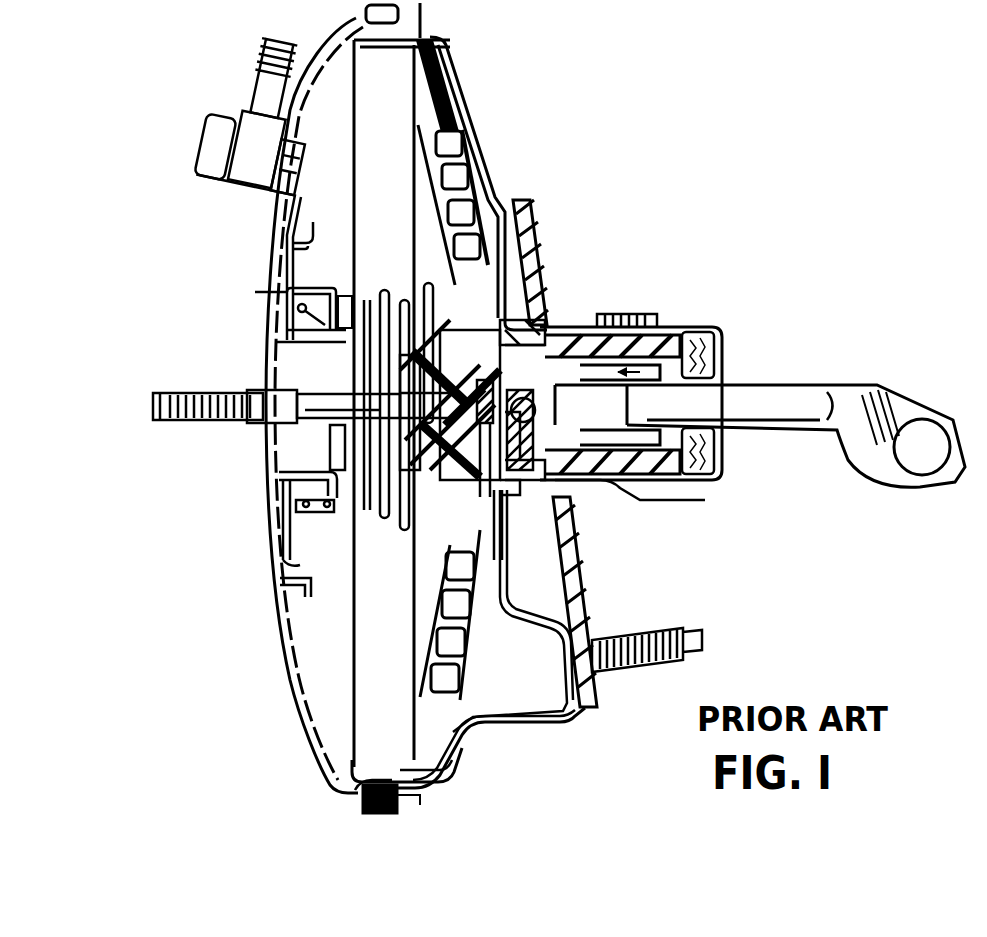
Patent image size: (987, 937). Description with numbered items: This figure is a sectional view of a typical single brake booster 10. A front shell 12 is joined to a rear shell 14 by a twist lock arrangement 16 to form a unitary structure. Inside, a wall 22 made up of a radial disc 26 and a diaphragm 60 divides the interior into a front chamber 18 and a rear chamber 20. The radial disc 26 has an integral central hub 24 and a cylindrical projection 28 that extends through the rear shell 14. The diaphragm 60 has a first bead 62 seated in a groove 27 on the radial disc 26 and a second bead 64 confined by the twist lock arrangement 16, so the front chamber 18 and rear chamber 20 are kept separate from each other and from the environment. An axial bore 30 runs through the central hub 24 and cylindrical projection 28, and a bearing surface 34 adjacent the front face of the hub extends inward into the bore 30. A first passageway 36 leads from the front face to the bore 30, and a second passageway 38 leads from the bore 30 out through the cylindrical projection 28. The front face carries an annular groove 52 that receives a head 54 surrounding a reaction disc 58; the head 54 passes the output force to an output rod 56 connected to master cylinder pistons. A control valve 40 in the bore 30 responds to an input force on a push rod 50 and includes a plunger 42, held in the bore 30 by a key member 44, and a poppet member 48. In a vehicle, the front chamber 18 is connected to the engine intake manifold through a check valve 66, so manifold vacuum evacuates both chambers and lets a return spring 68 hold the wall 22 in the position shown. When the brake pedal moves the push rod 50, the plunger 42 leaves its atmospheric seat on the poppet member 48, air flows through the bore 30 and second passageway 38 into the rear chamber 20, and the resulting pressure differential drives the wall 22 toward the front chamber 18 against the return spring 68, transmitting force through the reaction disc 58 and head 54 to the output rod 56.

The single brake booster 10 is at (106, 703).
The front shell 12 is at (294, 726).
The rear shell 14 is at (460, 768).
The twist lock arrangement 16 is at (378, 826).
The front chamber 18 is at (325, 277).
The rear chamber 20 is at (531, 662).
The wall 22 is at (375, 602).
The central hub 24 is at (418, 575).
The radial disc 26 is at (462, 666).
The groove 27 is at (490, 722).
The cylindrical projection 28 is at (664, 338).
The axial bore 30 is at (602, 333).
The bearing surface 34 is at (384, 306).
The first passageway 36 is at (418, 300).
The second passageway 38 is at (508, 485).
The control valve 40 is at (720, 333).
The plunger 42 is at (540, 300).
The key member 44 is at (503, 560).
The poppet member 48 is at (640, 484).
The push rod 50 is at (792, 405).
The annular groove 52 is at (408, 500).
The head 54 is at (400, 490).
The output rod 56 is at (310, 406).
The reaction disc 58 is at (335, 430).
The diaphragm 60 is at (398, 768).
The first bead 62 is at (462, 752).
The second bead 64 is at (360, 802).
The check valve 66 is at (215, 185).
The return spring 68 is at (255, 292).